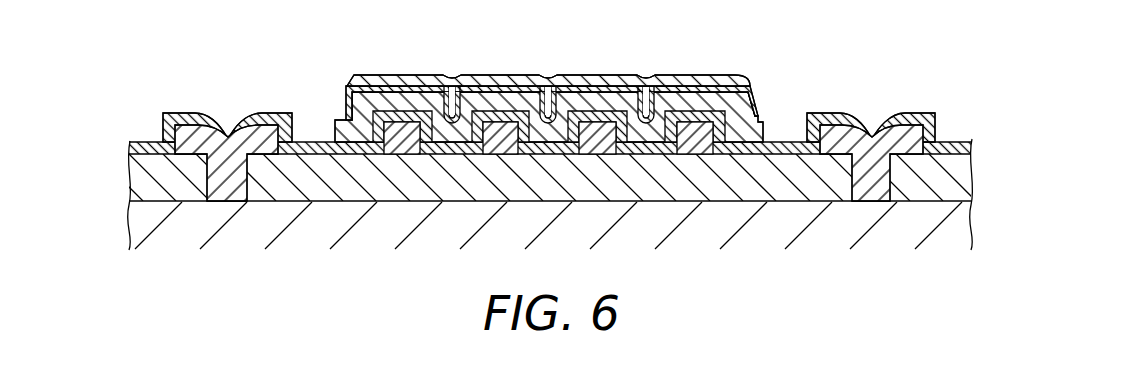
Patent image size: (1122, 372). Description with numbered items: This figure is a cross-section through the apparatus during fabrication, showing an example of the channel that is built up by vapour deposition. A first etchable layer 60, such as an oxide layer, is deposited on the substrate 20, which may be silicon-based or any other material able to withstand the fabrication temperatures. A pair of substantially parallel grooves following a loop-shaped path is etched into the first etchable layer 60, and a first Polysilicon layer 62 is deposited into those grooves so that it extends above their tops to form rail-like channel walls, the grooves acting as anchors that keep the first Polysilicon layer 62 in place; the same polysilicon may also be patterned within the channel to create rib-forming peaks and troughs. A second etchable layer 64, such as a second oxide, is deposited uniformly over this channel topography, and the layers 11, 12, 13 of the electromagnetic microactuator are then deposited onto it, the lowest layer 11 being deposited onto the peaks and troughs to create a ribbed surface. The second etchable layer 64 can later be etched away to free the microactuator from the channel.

The first layer 11 is at (748, 111).
The second layer 12 is at (748, 98).
The third layer 13 is at (713, 81).
The substrate 20 is at (763, 232).
The first etchable layer 60 is at (358, 187).
The first Polysilicon layer 62 is at (257, 138).
The second etchable layer 64 is at (913, 124).